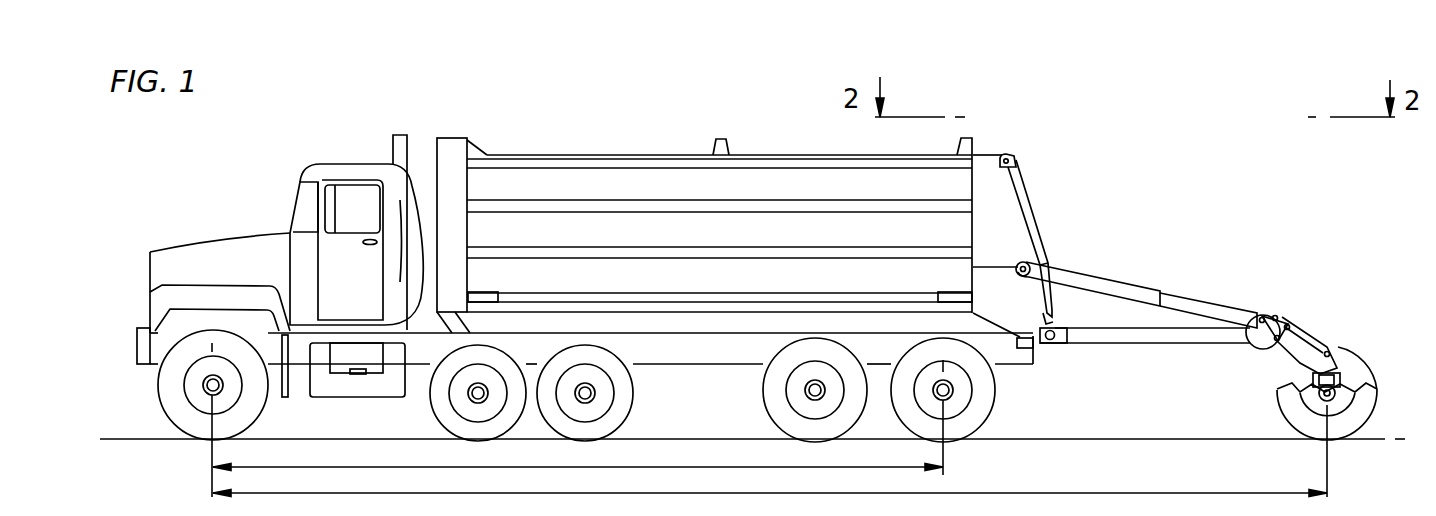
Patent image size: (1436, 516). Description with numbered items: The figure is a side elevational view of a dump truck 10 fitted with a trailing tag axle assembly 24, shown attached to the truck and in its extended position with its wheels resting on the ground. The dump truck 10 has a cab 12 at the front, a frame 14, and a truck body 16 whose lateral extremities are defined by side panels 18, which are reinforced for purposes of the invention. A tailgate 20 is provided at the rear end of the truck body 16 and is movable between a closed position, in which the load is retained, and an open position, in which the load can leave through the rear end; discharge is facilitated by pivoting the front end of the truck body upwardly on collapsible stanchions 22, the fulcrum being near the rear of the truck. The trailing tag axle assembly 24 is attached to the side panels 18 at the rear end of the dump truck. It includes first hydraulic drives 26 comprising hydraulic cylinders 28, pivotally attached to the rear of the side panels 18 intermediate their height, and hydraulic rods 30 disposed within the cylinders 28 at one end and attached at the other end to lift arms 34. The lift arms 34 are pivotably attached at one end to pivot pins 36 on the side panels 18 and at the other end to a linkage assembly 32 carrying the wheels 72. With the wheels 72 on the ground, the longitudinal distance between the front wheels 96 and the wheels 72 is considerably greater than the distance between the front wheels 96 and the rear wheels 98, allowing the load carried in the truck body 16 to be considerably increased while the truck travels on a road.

The dump truck 10 is at (597, 138).
The cab 12 is at (358, 166).
The frame 14 is at (712, 352).
The truck body 16 is at (769, 153).
The side panels 18 is at (1005, 232).
The tailgate 20 is at (1030, 200).
The collapsible stanchions 22 is at (1008, 152).
The trailing tag axle assembly 24 is at (1273, 300).
The first hydraulic drives 26 is at (1121, 276).
The hydraulic cylinders 28 is at (1066, 271).
The hydraulic rods 30 is at (1187, 297).
The linkage assembly 32 is at (1306, 321).
The lift arms 34 is at (1165, 340).
The pivot pins 36 is at (1052, 340).
The wheels 72 is at (1372, 408).
The front wheels 96 is at (170, 393).
The rear wheels 98 is at (985, 410).